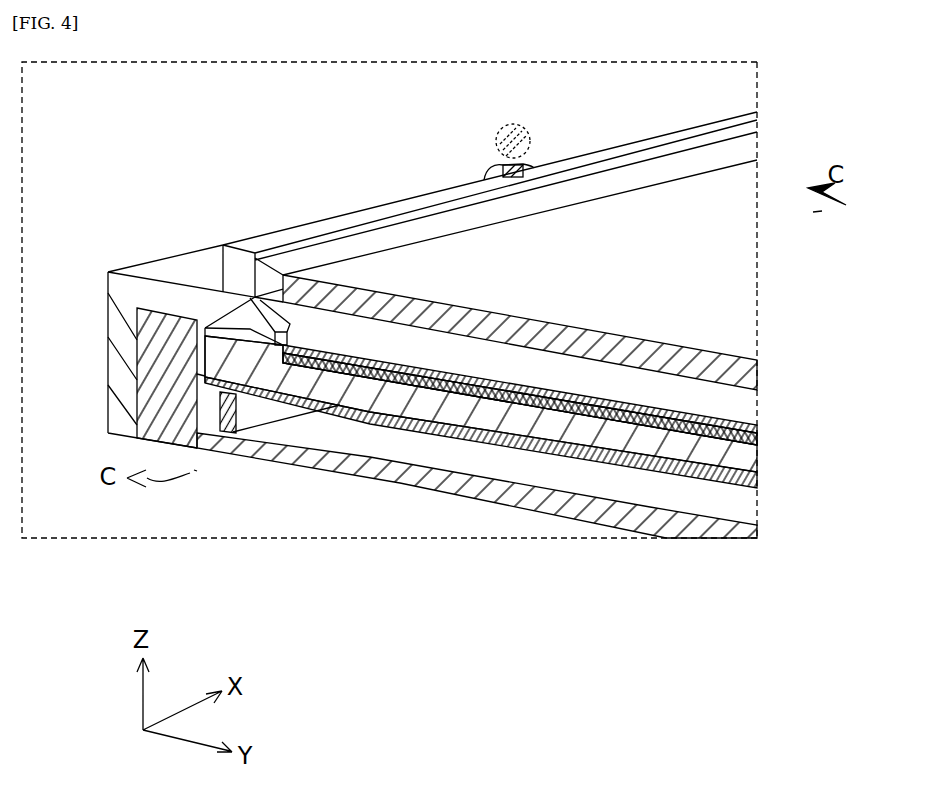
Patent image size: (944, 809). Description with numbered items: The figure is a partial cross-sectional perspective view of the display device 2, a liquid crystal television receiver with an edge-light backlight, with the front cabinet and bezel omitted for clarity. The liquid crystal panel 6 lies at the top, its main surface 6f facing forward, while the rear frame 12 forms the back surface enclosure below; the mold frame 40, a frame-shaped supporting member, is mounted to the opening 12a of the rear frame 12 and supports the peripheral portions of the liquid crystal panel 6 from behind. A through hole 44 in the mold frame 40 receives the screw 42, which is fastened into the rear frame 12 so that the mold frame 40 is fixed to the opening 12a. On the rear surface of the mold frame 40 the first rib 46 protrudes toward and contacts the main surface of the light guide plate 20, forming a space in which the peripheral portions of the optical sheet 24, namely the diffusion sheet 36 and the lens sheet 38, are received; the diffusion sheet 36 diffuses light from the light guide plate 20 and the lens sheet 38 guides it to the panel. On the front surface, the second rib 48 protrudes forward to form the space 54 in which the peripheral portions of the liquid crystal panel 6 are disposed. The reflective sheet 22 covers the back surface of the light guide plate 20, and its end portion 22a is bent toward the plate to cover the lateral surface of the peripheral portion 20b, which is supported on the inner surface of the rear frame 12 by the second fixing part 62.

The display device 2 is at (588, 103).
The liquid crystal panel 6 is at (738, 253).
The main surface 6f is at (740, 299).
The rear frame 12 is at (442, 484).
The opening 12a is at (145, 344).
The light guide plate 20 is at (547, 432).
The peripheral portion 20b is at (222, 378).
The reflective sheet 22 is at (583, 452).
The end portion 22a is at (200, 374).
The optical sheet 24 is at (582, 399).
The diffusion sheet 36 is at (740, 447).
The lens sheet 38 is at (735, 418).
The mold frame 40 is at (122, 288).
The screw 42 is at (497, 157).
The through hole 44 is at (537, 154).
The first rib 46 is at (224, 327).
The second rib 48 is at (300, 240).
The space 54 is at (302, 330).
The second fixing part 62 is at (245, 405).